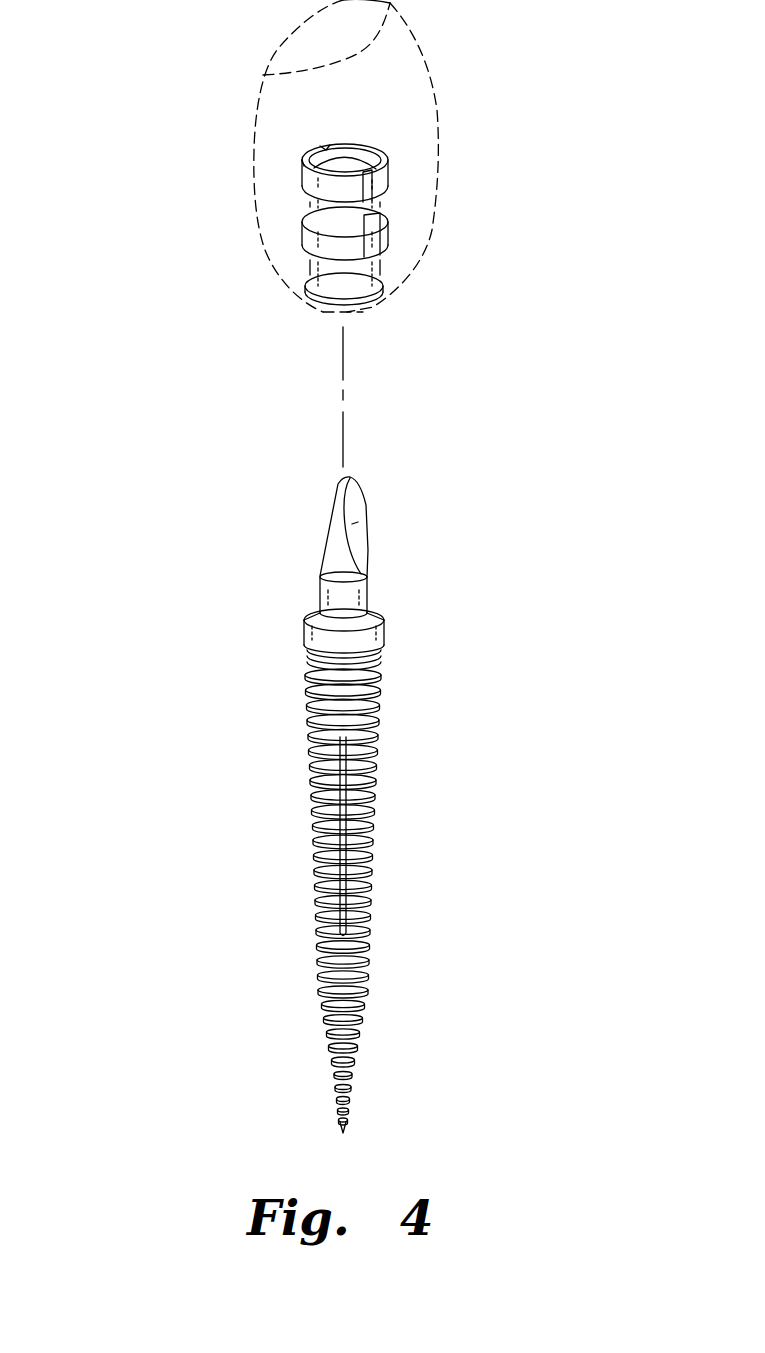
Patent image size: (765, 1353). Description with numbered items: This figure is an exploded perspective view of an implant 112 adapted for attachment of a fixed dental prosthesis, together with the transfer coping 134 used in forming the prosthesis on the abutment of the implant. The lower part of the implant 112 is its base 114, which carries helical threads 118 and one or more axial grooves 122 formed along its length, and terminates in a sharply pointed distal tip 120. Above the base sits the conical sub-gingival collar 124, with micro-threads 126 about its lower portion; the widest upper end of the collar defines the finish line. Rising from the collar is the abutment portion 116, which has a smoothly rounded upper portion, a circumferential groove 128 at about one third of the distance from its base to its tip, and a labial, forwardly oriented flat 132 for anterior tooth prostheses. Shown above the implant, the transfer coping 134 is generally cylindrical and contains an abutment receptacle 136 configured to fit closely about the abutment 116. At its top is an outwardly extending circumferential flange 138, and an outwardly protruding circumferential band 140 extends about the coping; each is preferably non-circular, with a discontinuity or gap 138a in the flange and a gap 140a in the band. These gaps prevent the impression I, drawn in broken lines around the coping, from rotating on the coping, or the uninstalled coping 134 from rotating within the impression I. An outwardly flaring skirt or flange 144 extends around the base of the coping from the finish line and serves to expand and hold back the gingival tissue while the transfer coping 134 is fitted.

The impression I is at (267, 77).
The implant 112 is at (232, 855).
The base 114 is at (396, 897).
The abutment portion 116 is at (328, 505).
The helical threads 118 is at (380, 692).
The distal tip 120 is at (350, 1132).
The axial grooves 122 is at (342, 868).
The sub-gingival collar 124 is at (383, 605).
The micro-threads 126 is at (380, 650).
The circumferential groove 128 is at (320, 573).
The flat 132 is at (357, 535).
The transfer coping 134 is at (317, 258).
The abutment receptacle 136 is at (305, 237).
The circumferential flange 138 is at (387, 157).
The discontinuity or gap 138a is at (326, 150).
The circumferential band 140 is at (387, 227).
The discontinuity or gap 140a is at (387, 213).
The skirt or flange 144 is at (380, 273).